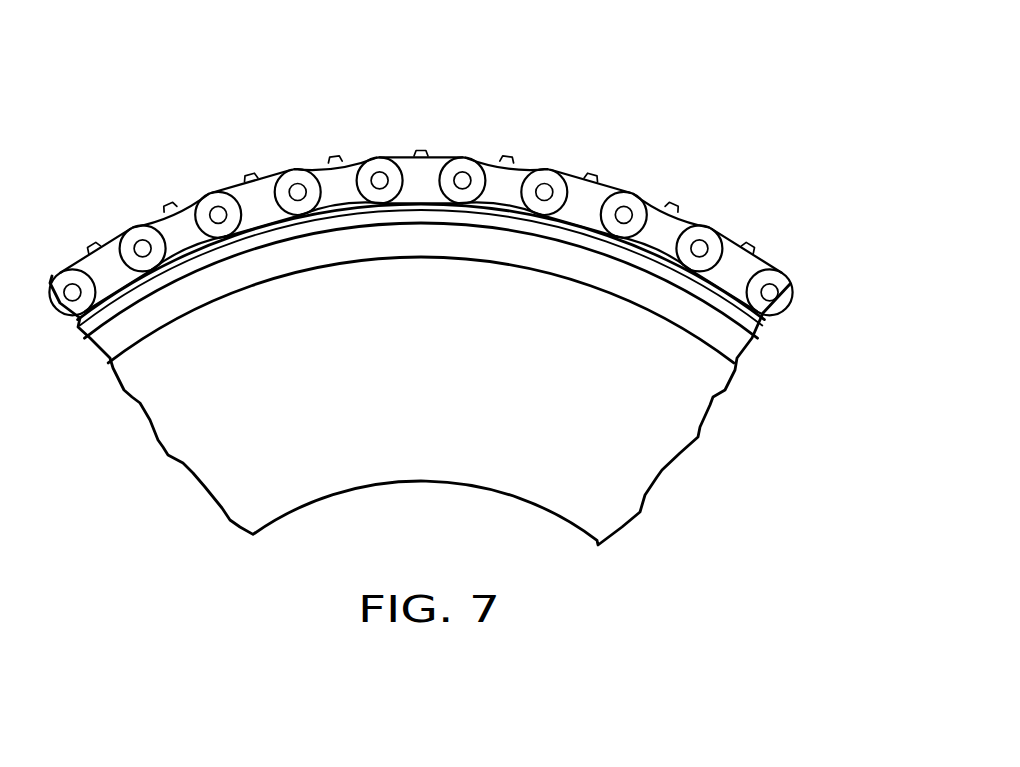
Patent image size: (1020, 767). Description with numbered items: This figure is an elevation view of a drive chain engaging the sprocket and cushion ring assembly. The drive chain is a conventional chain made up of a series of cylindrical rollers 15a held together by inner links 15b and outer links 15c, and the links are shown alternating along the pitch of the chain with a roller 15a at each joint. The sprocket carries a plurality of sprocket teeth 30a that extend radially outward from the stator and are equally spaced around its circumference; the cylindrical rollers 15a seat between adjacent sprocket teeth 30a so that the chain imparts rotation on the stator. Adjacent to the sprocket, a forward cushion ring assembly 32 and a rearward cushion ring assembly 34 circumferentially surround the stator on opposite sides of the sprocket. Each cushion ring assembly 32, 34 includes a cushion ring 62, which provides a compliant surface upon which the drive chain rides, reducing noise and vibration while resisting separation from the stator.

The cylindrical roller 15a is at (144, 253).
The inner link 15b is at (247, 198).
The outer link 15c is at (198, 207).
The sprocket tooth 30a is at (163, 213).
The forward cushion ring assembly 32 is at (421, 388).
The rearward cushion ring assembly 34 is at (696, 337).
The cushion ring 62 is at (167, 313).